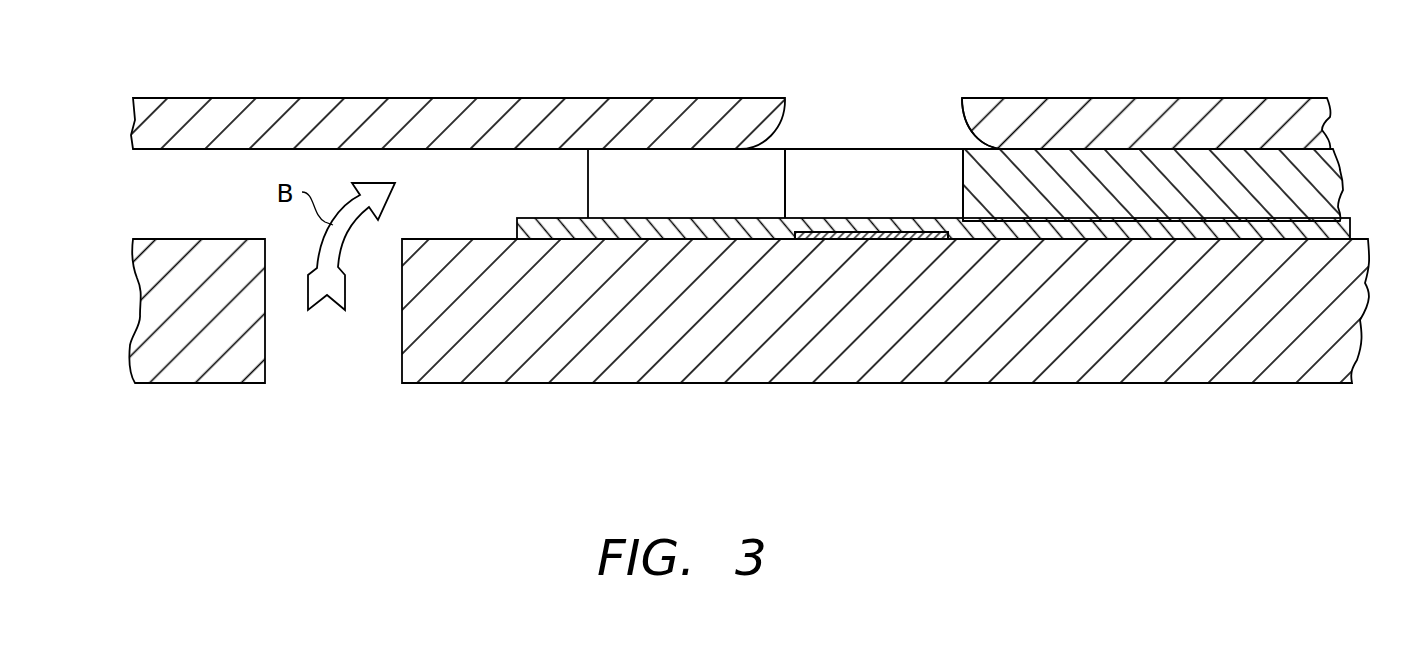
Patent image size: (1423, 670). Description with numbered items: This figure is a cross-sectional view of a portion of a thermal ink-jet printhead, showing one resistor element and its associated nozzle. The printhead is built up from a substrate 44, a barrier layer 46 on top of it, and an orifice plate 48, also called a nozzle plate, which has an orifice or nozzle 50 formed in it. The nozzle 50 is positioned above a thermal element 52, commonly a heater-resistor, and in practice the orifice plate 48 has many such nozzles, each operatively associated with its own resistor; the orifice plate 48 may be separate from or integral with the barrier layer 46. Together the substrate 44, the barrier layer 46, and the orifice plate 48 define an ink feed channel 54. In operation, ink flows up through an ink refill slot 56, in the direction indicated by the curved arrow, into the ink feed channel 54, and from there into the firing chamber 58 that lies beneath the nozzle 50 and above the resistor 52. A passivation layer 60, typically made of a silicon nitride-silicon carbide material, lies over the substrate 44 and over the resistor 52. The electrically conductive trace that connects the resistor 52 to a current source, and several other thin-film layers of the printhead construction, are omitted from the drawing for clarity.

The substrate 44 is at (648, 352).
The barrier layer 46 is at (645, 173).
The orifice plate 48 is at (660, 117).
The nozzle 50 is at (962, 99).
The thermal element 52 is at (878, 240).
The ink feed channel 54 is at (710, 193).
The ink refill slot 56 is at (365, 383).
The firing chamber 58 is at (893, 194).
The passivation layer 60 is at (1117, 240).